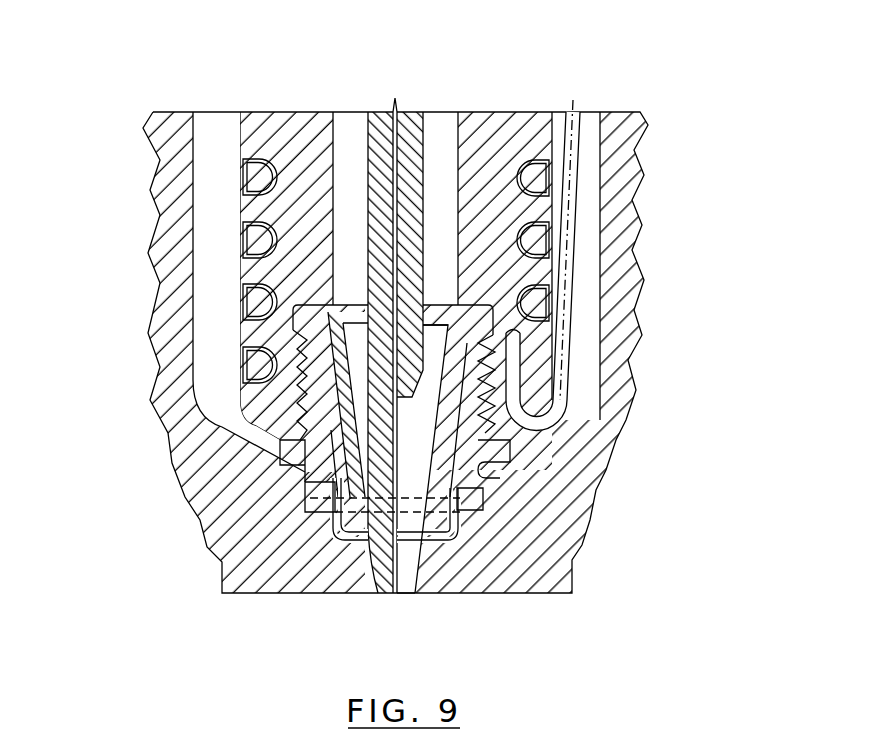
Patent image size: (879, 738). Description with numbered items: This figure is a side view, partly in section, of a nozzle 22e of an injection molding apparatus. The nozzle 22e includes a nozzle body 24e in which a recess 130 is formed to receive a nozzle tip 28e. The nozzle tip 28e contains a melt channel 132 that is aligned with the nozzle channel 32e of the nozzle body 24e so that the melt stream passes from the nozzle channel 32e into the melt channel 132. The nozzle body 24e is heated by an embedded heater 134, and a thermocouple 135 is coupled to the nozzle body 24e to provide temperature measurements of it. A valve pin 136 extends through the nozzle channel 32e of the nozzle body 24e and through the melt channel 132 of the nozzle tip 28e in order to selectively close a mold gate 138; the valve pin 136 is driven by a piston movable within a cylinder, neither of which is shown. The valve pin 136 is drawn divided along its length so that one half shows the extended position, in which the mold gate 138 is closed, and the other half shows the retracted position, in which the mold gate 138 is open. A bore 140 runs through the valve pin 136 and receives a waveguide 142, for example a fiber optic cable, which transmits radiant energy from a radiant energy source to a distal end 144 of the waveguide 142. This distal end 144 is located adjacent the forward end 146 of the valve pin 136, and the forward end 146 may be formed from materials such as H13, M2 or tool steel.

The nozzle 22e is at (512, 129).
The nozzle body 24e is at (283, 125).
The nozzle tip 28e is at (342, 476).
The nozzle channel 32e is at (440, 125).
The recess 130 is at (303, 347).
The melt channel 132 is at (428, 422).
The embedded heater 134 is at (252, 242).
The thermocouple 135 is at (572, 178).
The valve pin 136 is at (371, 423).
The mold gate 138 is at (407, 596).
The bore 140 is at (393, 282).
The waveguide 142 is at (425, 305).
The distal end 144 is at (338, 590).
The forward end 146 is at (382, 594).